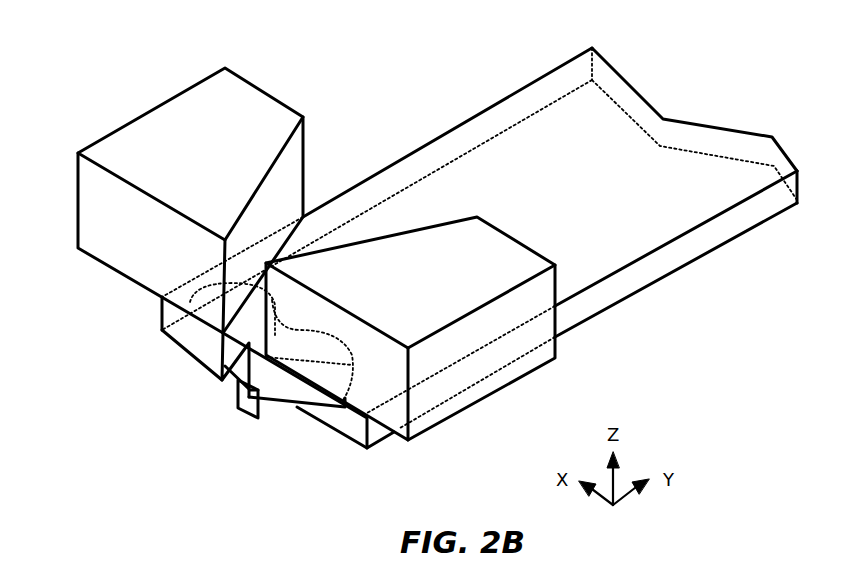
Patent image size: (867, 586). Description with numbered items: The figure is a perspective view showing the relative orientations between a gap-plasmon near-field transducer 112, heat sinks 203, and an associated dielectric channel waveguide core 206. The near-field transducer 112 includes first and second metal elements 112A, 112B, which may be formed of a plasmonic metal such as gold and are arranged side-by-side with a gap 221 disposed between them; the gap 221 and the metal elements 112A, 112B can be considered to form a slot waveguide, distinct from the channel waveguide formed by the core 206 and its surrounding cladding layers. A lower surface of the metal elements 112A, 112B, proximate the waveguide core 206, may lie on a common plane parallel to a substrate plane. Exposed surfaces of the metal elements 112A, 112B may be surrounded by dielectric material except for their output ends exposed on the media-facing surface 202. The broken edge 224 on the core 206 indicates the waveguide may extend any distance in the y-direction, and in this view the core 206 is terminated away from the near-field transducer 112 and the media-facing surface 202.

The near-field transducer 112 is at (196, 398).
The first metal element 112A is at (217, 360).
The second metal element 112B is at (268, 393).
The media-facing surface 202 is at (253, 408).
The heat sinks 203 is at (132, 126).
The waveguide core 206 is at (497, 103).
The gap 221 is at (232, 388).
The broken edge 224 is at (700, 125).